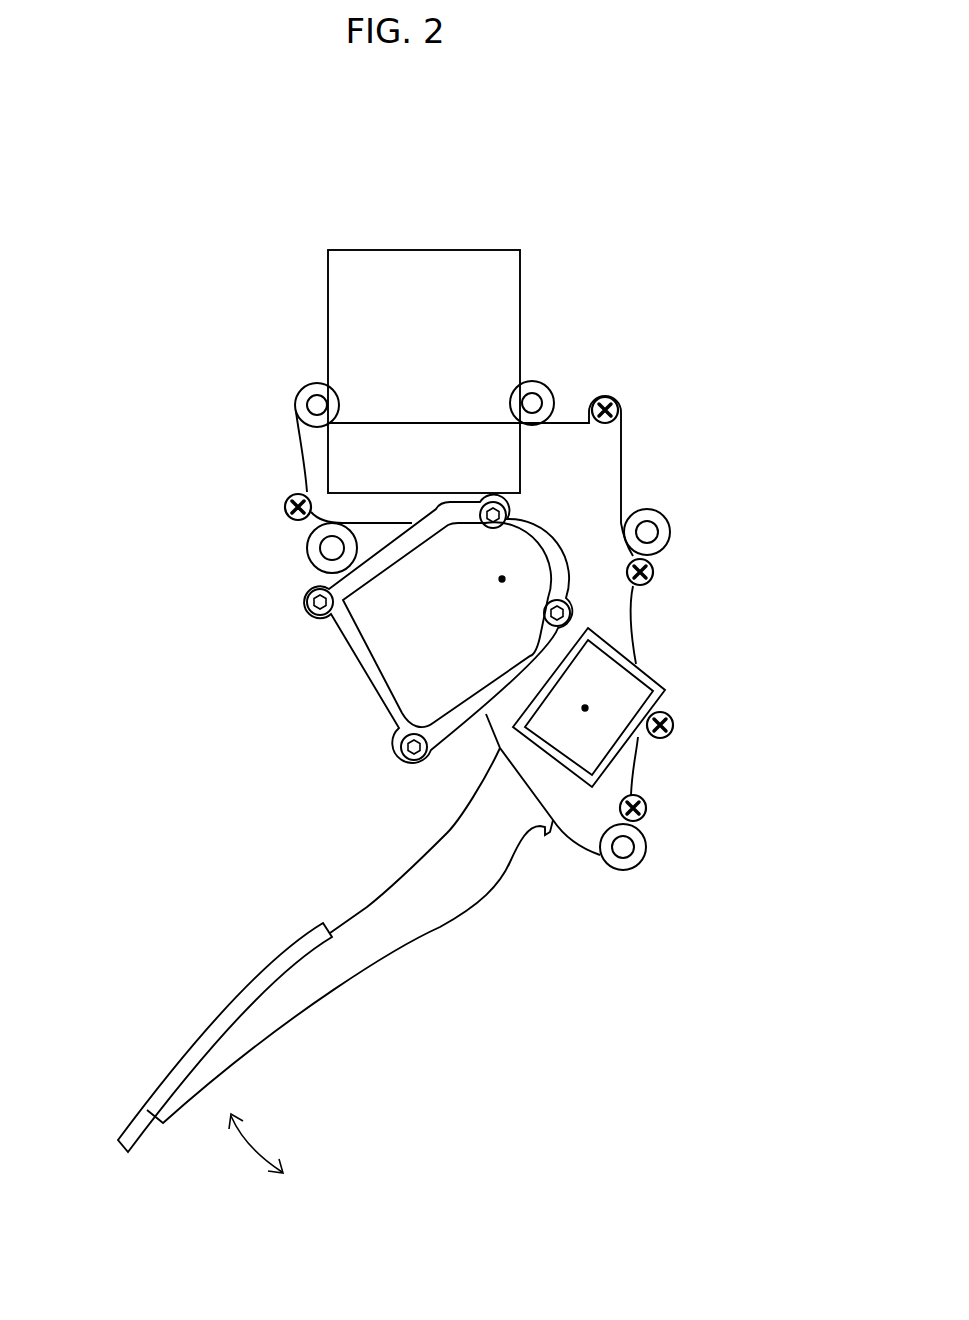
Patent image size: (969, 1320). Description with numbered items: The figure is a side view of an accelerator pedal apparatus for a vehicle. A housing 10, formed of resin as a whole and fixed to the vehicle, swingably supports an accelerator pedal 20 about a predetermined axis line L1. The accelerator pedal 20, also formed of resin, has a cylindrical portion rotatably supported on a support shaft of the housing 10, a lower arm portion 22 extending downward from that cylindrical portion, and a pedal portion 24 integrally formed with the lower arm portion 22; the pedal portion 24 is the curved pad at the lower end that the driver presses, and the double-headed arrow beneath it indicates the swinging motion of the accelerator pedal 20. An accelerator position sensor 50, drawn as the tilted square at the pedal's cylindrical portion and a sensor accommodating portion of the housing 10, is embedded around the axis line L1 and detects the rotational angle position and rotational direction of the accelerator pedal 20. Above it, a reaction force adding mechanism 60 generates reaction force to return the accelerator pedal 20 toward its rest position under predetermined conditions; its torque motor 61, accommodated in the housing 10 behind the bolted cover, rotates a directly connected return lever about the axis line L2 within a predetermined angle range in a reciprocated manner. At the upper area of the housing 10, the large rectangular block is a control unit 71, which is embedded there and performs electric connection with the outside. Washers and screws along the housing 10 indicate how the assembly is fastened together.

The housing 10 is at (602, 457).
The control unit 71 is at (345, 263).
The reaction force adding mechanism 60 is at (331, 629).
The torque motor 61 is at (388, 628).
The accelerator position sensor 50 is at (615, 684).
The axis line L1 is at (592, 714).
The axis line L2 is at (494, 579).
The accelerator pedal 20 is at (429, 939).
The lower arm portion 22 is at (460, 846).
The pedal portion 24 is at (217, 1000).